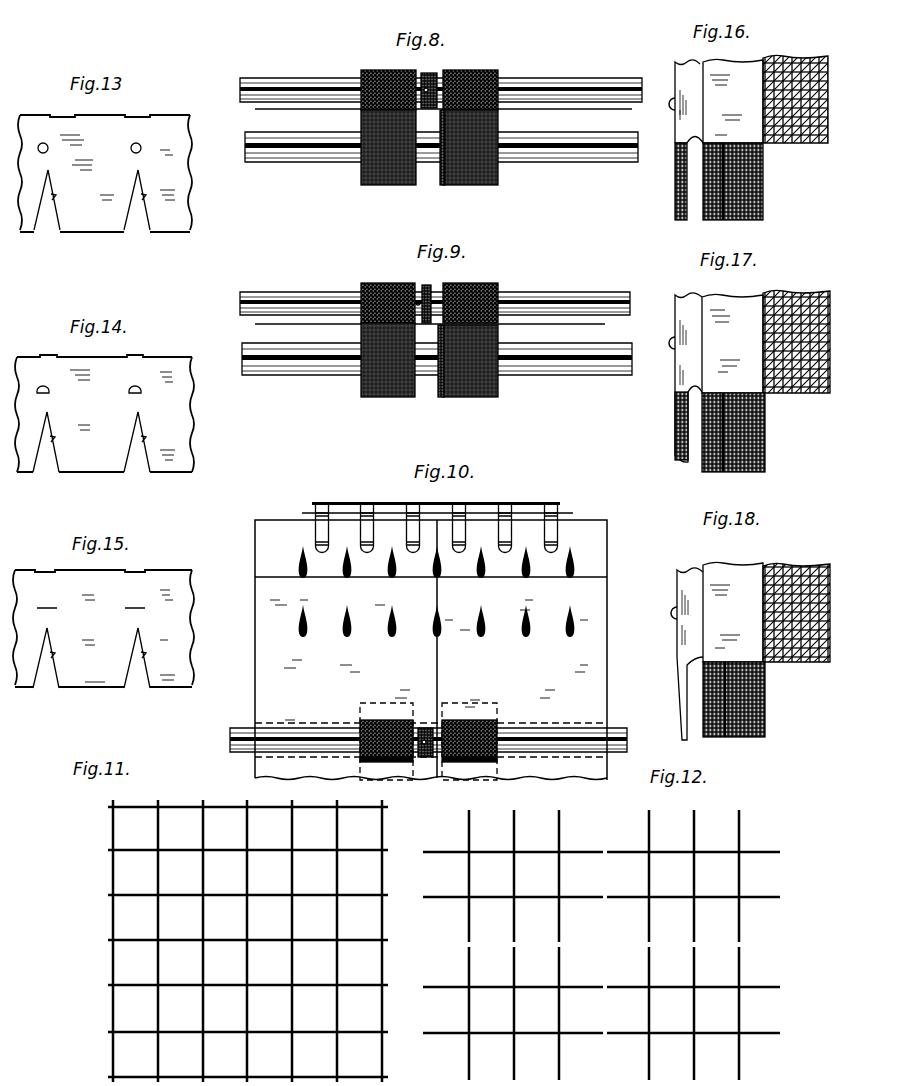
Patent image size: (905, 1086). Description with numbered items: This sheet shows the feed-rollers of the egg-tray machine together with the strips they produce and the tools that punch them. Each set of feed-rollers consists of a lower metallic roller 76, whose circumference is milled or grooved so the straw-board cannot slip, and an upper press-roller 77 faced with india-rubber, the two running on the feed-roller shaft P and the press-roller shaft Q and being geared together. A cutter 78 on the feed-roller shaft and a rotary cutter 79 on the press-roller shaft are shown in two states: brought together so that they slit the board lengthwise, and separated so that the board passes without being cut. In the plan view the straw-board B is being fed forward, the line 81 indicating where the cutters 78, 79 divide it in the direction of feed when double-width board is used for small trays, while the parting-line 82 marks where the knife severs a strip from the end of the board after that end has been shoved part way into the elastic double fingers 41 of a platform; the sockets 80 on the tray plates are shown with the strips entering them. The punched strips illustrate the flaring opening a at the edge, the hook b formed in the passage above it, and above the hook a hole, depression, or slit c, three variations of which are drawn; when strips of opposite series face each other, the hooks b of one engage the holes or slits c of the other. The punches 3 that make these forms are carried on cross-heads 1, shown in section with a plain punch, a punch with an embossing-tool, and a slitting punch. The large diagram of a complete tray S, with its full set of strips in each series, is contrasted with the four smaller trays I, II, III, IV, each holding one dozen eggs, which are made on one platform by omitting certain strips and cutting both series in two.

In FIG. 8, the lower metallic feed-roller 76 is at (429, 157).
In FIG. 9, the lower metallic feed-roller 76 is at (380, 410).
In FIG. 8, the upper press-roller 77 is at (429, 83).
In FIG. 9, the upper press-roller 77 is at (376, 284).
In FIG. 10, the upper press-roller 77 is at (428, 741).
In FIG. 8, the cutter on feed-roller shaft 78 is at (436, 157).
In FIG. 9, the cutter on feed-roller shaft 78 is at (437, 400).
In FIG. 8, the rotary cutter 79 is at (432, 82).
In FIG. 9, the rotary cutter 79 is at (424, 284).
In FIG. 10, the rotary cutter 79 is at (427, 731).
In FIG. 10, the pendant drops 80 is at (349, 637).
In FIG. 10, the lengthwise cutting line 81 is at (436, 683).
In FIG. 10, the parting-line or plain edge 82 is at (275, 570).
In FIG. 13, the parting-line or plain edge 82 is at (105, 166).
In FIG. 14, the parting-line or plain edge 82 is at (104, 406).
In FIG. 15, the parting-line or plain edge 82 is at (103, 620).
In FIG. 10, the elastic double fingers 41 is at (437, 527).
In FIG. 16, the cross-head 1 is at (795, 94).
In FIG. 17, the cross-head 1 is at (796, 331).
In FIG. 18, the cross-head 1 is at (796, 604).
In FIG. 16, the punch 3 is at (716, 139).
In FIG. 17, the punch 3 is at (717, 382).
In FIG. 18, the punch 3 is at (718, 651).
In FIG. 8, the press-roller shaft Q is at (441, 83).
In FIG. 9, the press-roller shaft Q is at (435, 297).
In FIG. 10, the press-roller shaft Q is at (537, 740).
In FIG. 8, the feed-roller shaft P is at (560, 160).
In FIG. 9, the feed-roller shaft P is at (437, 370).
In FIG. 10, the feed-roller shaft P is at (612, 735).
In FIG. 8, the roll of straw-board B is at (589, 112).
In FIG. 9, the roll of straw-board B is at (430, 333).
In FIG. 13, the flaring opening a is at (89, 229).
In FIG. 14, the flaring opening a is at (89, 470).
In FIG. 15, the flaring opening a is at (88, 687).
In FIG. 13, the hook b is at (89, 200).
In FIG. 14, the hook b is at (89, 442).
In FIG. 15, the hook b is at (90, 658).
In FIG. 13, the hole, depression, or slit c is at (94, 149).
In FIG. 14, the hole, depression, or slit c is at (95, 392).
In FIG. 15, the hole, depression, or slit c is at (91, 599).
In FIG. 11, the grid screen S is at (168, 807).
In FIG. 12, the smaller egg-tray I is at (513, 876).
In FIG. 12, the smaller egg-tray II is at (691, 876).
In FIG. 12, the smaller egg-tray III is at (513, 1013).
In FIG. 12, the smaller egg-tray IV is at (691, 1013).